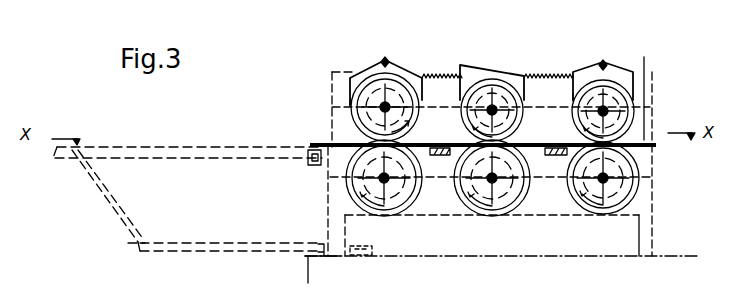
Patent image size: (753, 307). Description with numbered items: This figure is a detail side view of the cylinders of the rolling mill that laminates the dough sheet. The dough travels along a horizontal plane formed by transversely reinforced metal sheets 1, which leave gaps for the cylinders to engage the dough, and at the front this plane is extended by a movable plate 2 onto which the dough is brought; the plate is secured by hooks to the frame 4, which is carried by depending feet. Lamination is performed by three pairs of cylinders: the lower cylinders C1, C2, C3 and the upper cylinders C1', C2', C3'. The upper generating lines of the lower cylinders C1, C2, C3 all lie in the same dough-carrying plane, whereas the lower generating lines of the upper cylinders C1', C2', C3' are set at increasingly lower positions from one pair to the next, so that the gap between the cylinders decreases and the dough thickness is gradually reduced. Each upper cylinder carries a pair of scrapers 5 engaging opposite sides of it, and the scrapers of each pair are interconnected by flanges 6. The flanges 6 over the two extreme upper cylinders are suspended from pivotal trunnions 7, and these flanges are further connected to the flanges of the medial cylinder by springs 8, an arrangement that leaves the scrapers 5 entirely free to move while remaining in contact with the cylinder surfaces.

The metal sheets 1 is at (455, 149).
The movable plate 2 is at (197, 147).
The frame 4 is at (131, 251).
The scrapers 5 is at (350, 105).
The flanges 6 is at (394, 70).
The pivotal trunnions 7 is at (384, 61).
The springs 8 is at (440, 76).
The lower cylinder C1 is at (384, 219).
The lower cylinder C2 is at (492, 219).
The lower cylinder C3 is at (603, 221).
The upper cylinder C1' is at (342, 88).
The upper cylinder C2' is at (492, 74).
The upper cylinder C3' is at (648, 111).